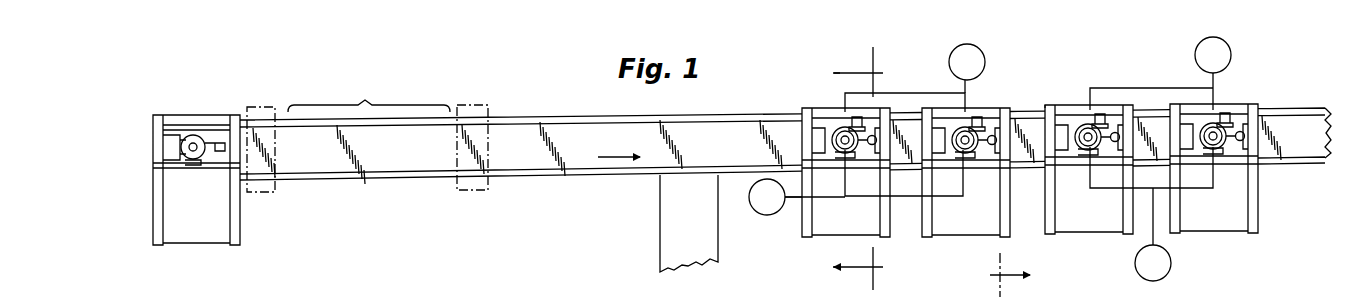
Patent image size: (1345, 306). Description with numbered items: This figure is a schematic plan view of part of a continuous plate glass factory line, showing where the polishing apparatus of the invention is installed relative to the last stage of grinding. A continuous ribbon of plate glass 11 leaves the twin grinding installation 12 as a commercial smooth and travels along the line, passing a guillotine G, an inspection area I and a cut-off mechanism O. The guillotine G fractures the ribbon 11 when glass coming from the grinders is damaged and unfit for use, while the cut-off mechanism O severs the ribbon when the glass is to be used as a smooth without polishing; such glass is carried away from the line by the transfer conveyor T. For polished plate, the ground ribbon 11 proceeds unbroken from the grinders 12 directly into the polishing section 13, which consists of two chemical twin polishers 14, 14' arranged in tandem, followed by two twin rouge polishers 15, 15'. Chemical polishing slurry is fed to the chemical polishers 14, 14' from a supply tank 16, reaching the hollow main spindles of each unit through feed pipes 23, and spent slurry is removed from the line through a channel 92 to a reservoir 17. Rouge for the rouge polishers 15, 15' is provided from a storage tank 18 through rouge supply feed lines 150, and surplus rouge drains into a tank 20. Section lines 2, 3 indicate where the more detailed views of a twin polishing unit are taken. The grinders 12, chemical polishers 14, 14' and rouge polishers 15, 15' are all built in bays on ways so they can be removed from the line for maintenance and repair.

The continuous ribbon of plate glass 11 is at (530, 125).
The twin grinding installation 12 is at (236, 91).
The polishing section 13 is at (1066, 76).
The chemical twin polisher 14 is at (834, 157).
The chemical twin polisher 14' is at (974, 154).
The twin rouge polisher 15 is at (1089, 146).
The twin rouge polisher 15' is at (1227, 152).
The supply tank 16 is at (767, 215).
The reservoir 17 is at (950, 56).
The storage tank 18 is at (1171, 263).
The tank 20 is at (1229, 50).
The feed pipes 23 is at (845, 184).
The supply line 92 is at (913, 93).
The rouge supply feed lines 150 is at (1090, 186).
The inspection area I is at (369, 93).
The guillotine G is at (272, 196).
The cut-off mechanism O is at (477, 196).
The transfer conveyor T is at (655, 236).
The section line 2 is at (866, 168).
The section line 3 is at (1000, 275).